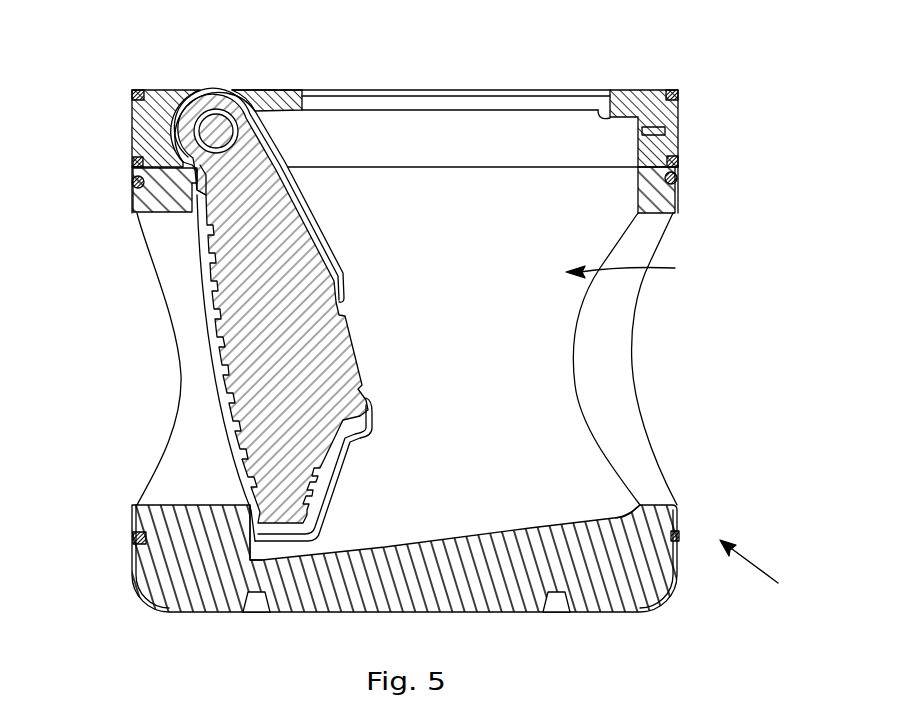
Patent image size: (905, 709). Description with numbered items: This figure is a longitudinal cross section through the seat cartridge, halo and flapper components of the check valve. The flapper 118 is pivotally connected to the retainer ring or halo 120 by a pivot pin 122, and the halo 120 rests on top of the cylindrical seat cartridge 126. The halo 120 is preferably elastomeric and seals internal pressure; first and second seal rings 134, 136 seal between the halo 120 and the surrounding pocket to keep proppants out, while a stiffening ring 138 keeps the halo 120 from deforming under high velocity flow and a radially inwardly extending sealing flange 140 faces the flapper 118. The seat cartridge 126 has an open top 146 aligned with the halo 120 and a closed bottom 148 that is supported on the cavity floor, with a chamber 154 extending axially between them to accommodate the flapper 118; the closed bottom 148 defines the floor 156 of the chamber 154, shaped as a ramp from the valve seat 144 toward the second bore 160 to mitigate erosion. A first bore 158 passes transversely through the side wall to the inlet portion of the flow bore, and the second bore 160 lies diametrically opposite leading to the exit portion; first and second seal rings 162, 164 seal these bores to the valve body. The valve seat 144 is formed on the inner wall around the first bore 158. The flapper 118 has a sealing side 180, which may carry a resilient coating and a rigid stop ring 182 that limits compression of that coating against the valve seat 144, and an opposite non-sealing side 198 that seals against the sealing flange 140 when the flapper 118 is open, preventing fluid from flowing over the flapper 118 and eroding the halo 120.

The flapper 118 is at (291, 315).
The halo 120 is at (438, 129).
The pivot pin 122 is at (233, 113).
The seat cartridge 126 is at (769, 566).
The first seal ring 134 is at (682, 95).
The second seal ring 136 is at (680, 162).
The stiffening ring 138 is at (668, 130).
The sealing flange 140 is at (604, 118).
The valve seat 144 is at (266, 520).
The open top 146 is at (138, 160).
The closed bottom 148 is at (520, 612).
The chamber 154 is at (640, 269).
The floor 156 is at (616, 512).
The first bore 158 is at (164, 503).
The second bore 160 is at (620, 366).
The first seal ring 162 is at (134, 540).
The second seal ring 164 is at (680, 180).
The sealing side 180 is at (213, 365).
The stop ring 182 is at (197, 200).
The non-sealing side 198 is at (346, 256).